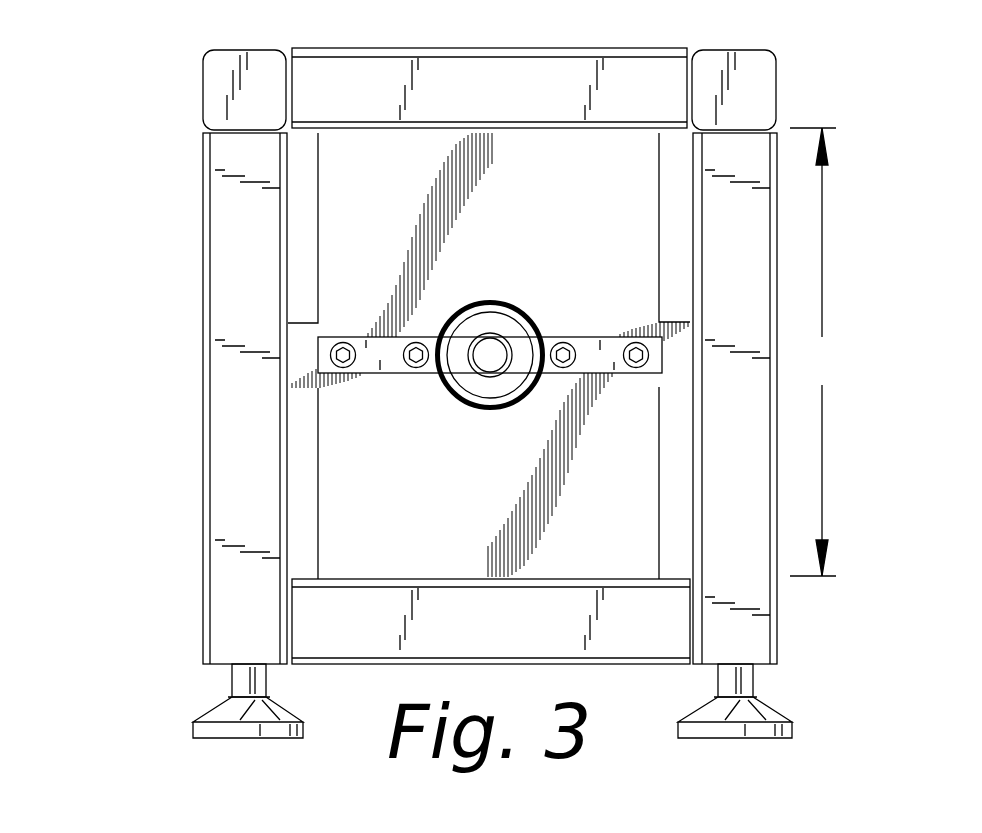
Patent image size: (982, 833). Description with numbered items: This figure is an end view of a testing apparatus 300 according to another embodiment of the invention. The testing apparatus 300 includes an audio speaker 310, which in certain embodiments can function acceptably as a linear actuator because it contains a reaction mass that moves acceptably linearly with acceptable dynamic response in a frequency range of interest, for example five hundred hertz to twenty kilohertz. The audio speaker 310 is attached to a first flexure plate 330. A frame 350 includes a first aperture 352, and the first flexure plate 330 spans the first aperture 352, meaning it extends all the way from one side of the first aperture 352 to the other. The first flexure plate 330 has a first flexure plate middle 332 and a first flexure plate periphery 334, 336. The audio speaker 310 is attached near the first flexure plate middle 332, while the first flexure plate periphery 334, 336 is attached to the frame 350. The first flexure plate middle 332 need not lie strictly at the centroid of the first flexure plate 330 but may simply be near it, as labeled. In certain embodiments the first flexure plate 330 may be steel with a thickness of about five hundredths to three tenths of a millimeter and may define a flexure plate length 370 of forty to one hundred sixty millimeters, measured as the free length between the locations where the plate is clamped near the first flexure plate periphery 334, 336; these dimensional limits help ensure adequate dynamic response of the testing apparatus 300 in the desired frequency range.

The testing apparatus 300 is at (160, 63).
The audio speaker 310 is at (485, 390).
The first flexure plate 330 is at (401, 356).
The first flexure plate middle 332 is at (428, 385).
The first flexure plate periphery 334 is at (492, 134).
The first flexure plate periphery 336 is at (498, 574).
The frame 350 is at (207, 157).
The first aperture 352 is at (305, 257).
The flexure plate length 370 is at (819, 352).